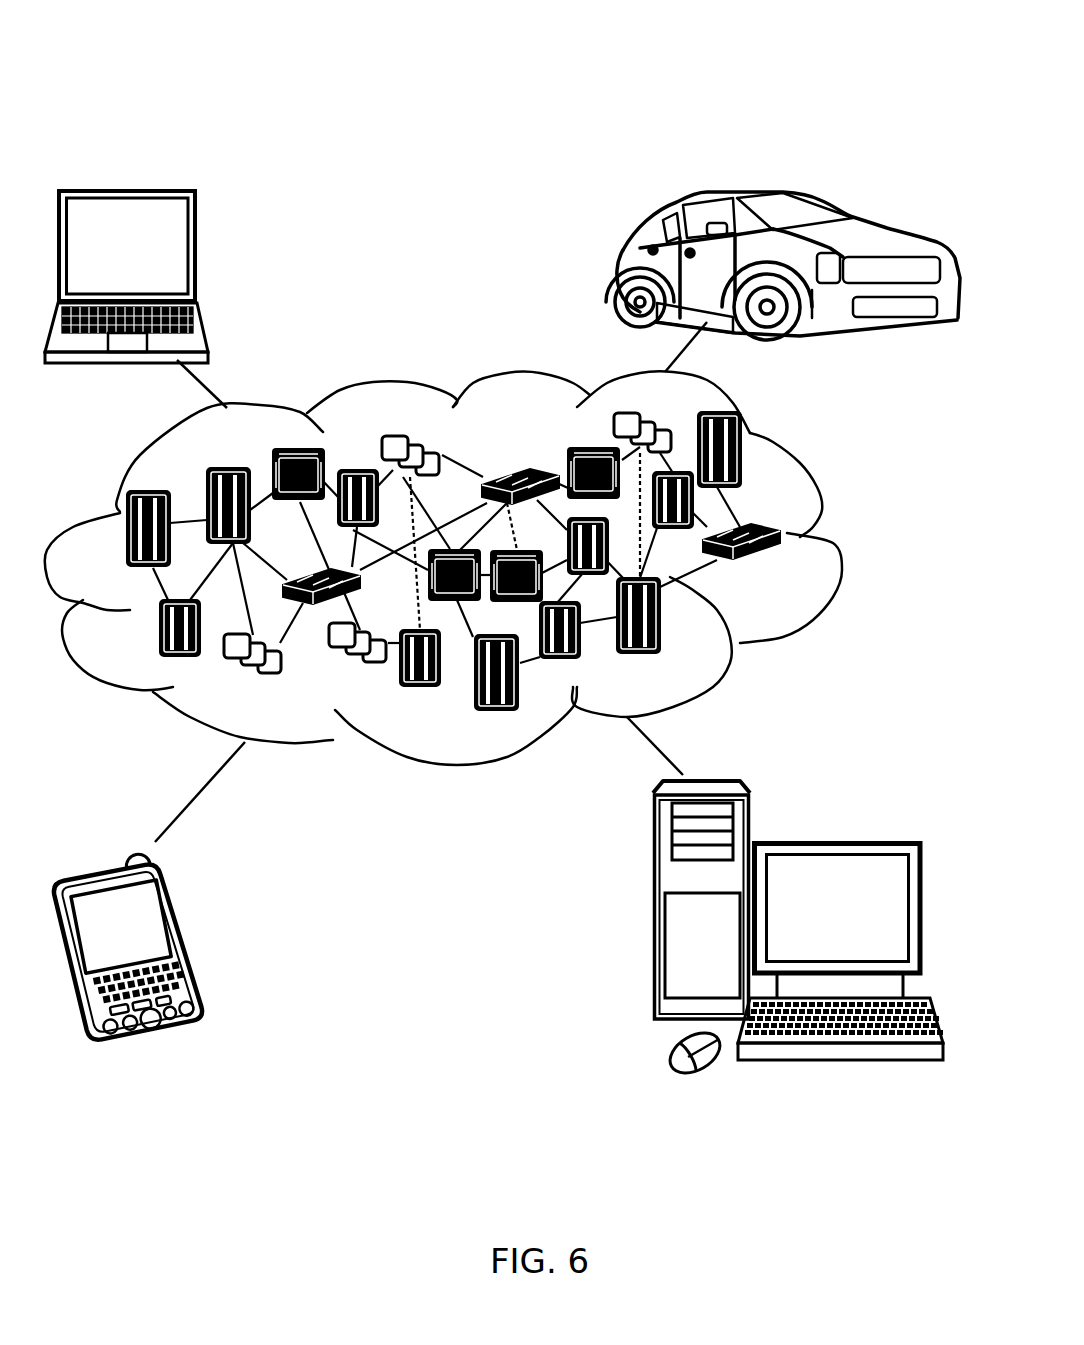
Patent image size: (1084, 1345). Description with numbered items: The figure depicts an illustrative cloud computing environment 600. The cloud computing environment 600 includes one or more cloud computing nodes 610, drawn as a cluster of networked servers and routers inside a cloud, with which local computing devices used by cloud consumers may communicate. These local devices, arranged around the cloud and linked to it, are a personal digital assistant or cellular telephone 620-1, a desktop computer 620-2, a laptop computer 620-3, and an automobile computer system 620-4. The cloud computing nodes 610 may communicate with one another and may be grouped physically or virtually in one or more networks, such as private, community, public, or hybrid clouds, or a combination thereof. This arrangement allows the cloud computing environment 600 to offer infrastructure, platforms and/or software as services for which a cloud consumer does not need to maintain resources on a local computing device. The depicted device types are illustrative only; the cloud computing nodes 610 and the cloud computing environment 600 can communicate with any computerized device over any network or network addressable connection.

The cloud computing environment 600 is at (780, 45).
The cloud computing nodes 610 is at (783, 571).
The personal digital assistant (PDA) or cellular telephone 620-1 is at (187, 941).
The desktop computer 620-2 is at (846, 818).
The laptop computer 620-3 is at (197, 251).
The automobile computer system 620-4 is at (620, 268).